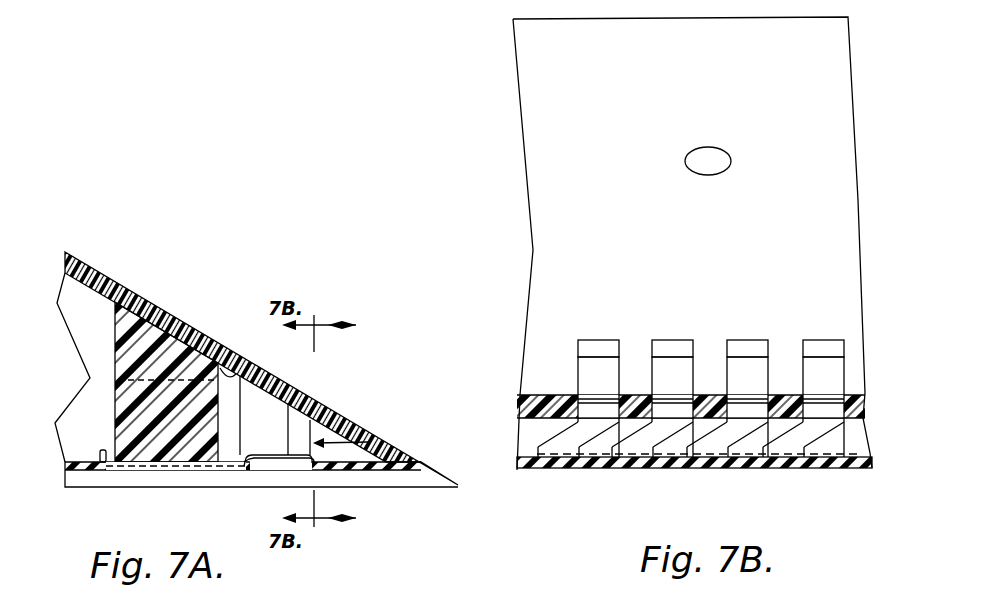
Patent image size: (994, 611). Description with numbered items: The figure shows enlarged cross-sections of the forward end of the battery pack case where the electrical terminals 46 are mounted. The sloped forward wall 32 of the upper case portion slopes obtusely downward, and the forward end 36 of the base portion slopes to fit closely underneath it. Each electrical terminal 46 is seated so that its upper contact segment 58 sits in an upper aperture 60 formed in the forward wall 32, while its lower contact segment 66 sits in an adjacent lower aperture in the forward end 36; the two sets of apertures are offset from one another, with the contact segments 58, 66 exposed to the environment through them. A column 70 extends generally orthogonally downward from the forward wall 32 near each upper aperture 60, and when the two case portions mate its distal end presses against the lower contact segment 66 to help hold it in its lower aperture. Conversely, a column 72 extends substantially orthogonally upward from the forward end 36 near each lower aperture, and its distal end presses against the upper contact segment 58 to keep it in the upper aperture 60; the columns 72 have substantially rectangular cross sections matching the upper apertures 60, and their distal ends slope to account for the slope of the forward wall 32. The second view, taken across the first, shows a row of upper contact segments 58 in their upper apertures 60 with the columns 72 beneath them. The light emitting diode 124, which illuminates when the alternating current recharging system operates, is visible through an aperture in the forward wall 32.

In FIG. 7A, the forward wall 32 is at (117, 283).
In FIG. 7B, the forward wall 32 is at (805, 153).
In FIG. 7A, the forward end 36 is at (400, 488).
In FIG. 7A, the electrical terminal 46 is at (368, 442).
In FIG. 7A, the upper contact segment 58 is at (300, 392).
In FIG. 7B, the upper contact segment 58 is at (592, 374).
In FIG. 7A, the upper aperture 60 is at (103, 472).
In FIG. 7B, the upper aperture 60 is at (598, 345).
In FIG. 7A, the lower contact segment 66 is at (178, 471).
In FIG. 7A, the column 70 is at (122, 413).
In FIG. 7A, the column 72 is at (260, 428).
In FIG. 7B, the column 72 is at (597, 455).
In FIG. 7B, the light emitting diode 124 is at (722, 147).